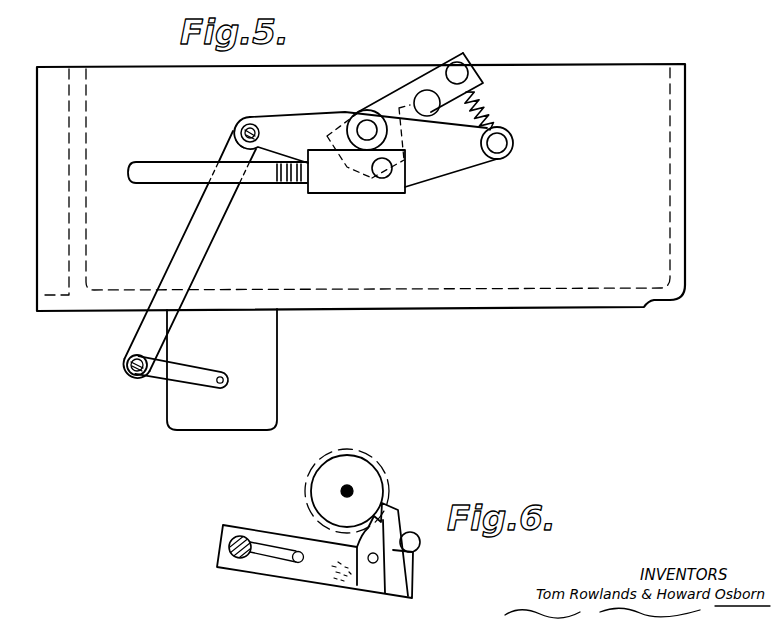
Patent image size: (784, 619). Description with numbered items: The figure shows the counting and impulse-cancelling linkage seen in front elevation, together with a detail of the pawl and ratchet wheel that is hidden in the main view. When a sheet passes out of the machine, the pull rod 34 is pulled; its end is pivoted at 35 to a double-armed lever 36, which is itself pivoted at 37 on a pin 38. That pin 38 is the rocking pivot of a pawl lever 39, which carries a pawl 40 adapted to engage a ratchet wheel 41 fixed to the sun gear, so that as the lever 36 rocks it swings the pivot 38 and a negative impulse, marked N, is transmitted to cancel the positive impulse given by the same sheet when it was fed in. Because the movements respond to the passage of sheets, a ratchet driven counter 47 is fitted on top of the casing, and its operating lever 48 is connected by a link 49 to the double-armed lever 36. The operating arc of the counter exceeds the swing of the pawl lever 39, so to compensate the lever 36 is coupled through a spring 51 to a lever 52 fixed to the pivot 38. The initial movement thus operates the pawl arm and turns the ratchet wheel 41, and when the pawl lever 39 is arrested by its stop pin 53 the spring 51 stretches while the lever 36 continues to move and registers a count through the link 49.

In FIG. 5, the pull rod 34 is at (152, 160).
In FIG. 5, the pivot 35 is at (384, 179).
In FIG. 5, the double-armed lever 36 is at (308, 122).
In FIG. 5, the pivot 37 is at (360, 125).
In FIG. 5, the pin 38 is at (373, 125).
In FIG. 6, the pin 38 is at (240, 537).
In FIG. 6, the pawl lever 39 is at (272, 569).
In FIG. 6, the pawl 40 is at (390, 518).
In FIG. 6, the ratchet wheel 41 is at (379, 462).
In FIG. 5, the counter 47 is at (263, 343).
In FIG. 5, the operating lever 48 is at (160, 373).
In FIG. 5, the link 49 is at (213, 227).
In FIG. 5, the spring 51 is at (485, 110).
In FIG. 5, the lever 52 is at (465, 52).
In FIG. 5, the stop pin 53 is at (429, 98).
In FIG. 6, the stop pin 53 is at (414, 550).
In FIG. 5, the negative impulse marking N is at (366, 106).
In FIG. 6, the negative impulse marking N is at (365, 446).